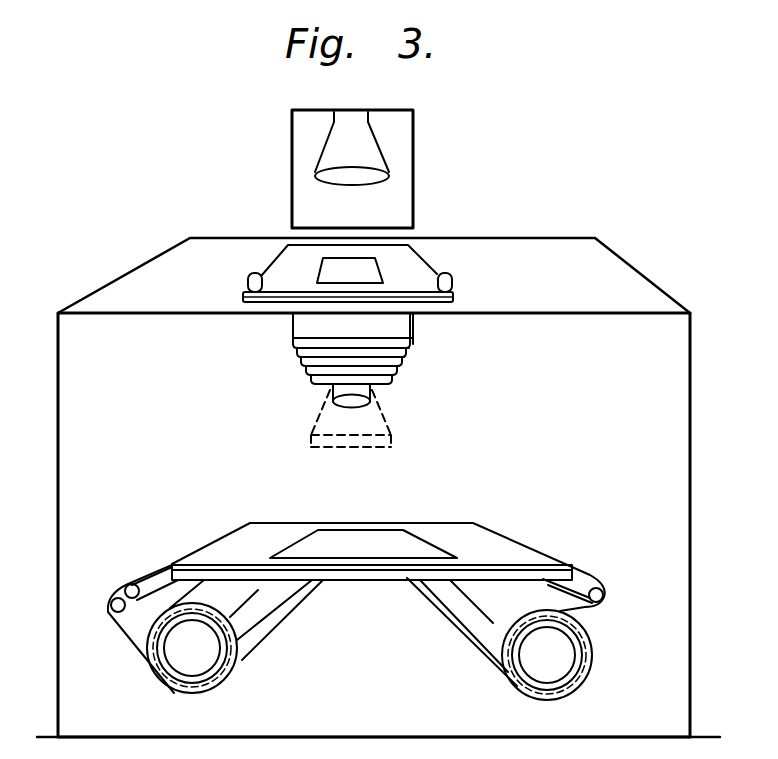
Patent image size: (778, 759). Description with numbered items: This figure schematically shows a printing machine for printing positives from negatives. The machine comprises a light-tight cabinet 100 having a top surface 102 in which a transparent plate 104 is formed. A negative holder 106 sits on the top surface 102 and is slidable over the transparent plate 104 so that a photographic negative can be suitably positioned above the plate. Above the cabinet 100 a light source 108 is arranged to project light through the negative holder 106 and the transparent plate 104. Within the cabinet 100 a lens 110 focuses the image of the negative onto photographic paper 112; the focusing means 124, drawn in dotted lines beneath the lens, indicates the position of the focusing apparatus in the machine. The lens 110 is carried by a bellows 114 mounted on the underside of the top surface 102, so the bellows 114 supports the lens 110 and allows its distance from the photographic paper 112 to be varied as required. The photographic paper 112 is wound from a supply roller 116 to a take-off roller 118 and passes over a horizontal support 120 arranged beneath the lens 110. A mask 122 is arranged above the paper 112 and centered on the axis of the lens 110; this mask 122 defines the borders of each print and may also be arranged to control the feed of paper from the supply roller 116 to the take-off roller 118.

The light-tight cabinet 100 is at (692, 352).
The top surface 102 is at (214, 300).
The transparent plate 104 is at (442, 303).
The negative holder 106 is at (427, 271).
The light source 108 is at (418, 175).
The lens 110 is at (356, 412).
The photographic paper 112 is at (590, 574).
The bellows 114 is at (398, 354).
The supply roller 116 is at (203, 658).
The take-off roller 118 is at (537, 667).
The horizontal support 120 is at (368, 578).
The mask 122 is at (443, 546).
The focusing means 124 is at (392, 434).